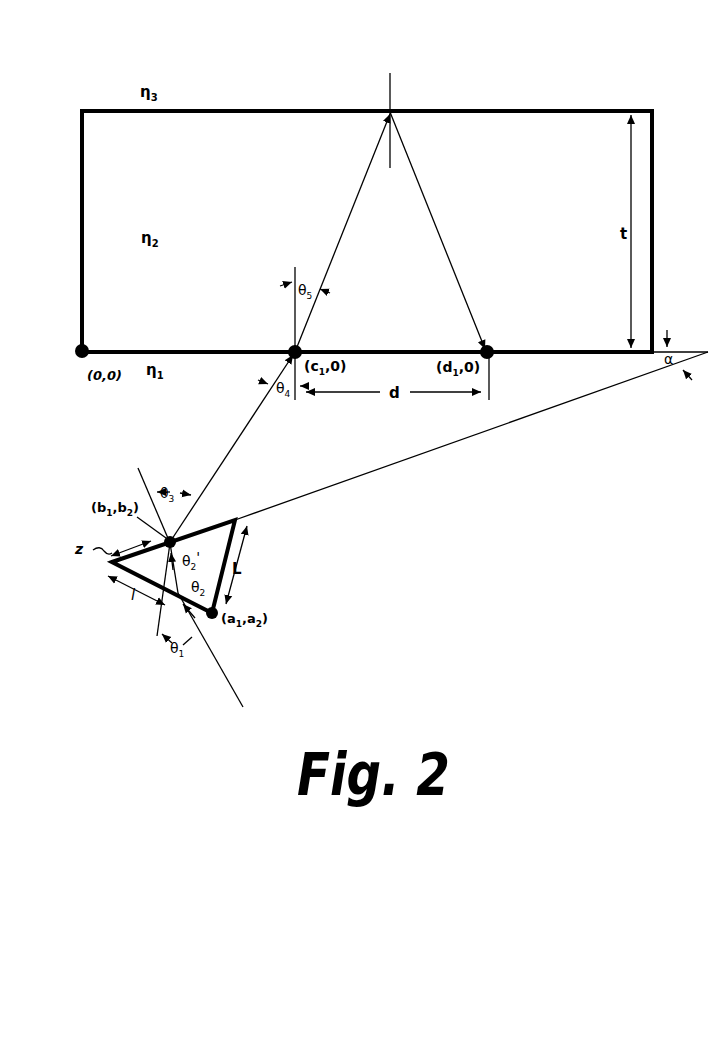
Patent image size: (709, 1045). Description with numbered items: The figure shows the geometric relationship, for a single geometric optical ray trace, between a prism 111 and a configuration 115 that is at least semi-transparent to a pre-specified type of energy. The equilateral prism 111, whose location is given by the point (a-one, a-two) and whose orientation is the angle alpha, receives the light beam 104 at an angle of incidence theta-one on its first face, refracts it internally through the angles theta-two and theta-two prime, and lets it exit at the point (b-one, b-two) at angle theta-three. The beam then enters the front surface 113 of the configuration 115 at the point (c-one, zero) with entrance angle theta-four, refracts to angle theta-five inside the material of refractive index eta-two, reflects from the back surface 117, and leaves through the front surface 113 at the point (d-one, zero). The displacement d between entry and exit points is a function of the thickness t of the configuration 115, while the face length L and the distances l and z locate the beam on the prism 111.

The incident light beam 104 is at (243, 685).
The prism 111 is at (208, 522).
The front surface 113 is at (560, 357).
The configuration 115 is at (146, 323).
The back surface 117 is at (540, 105).